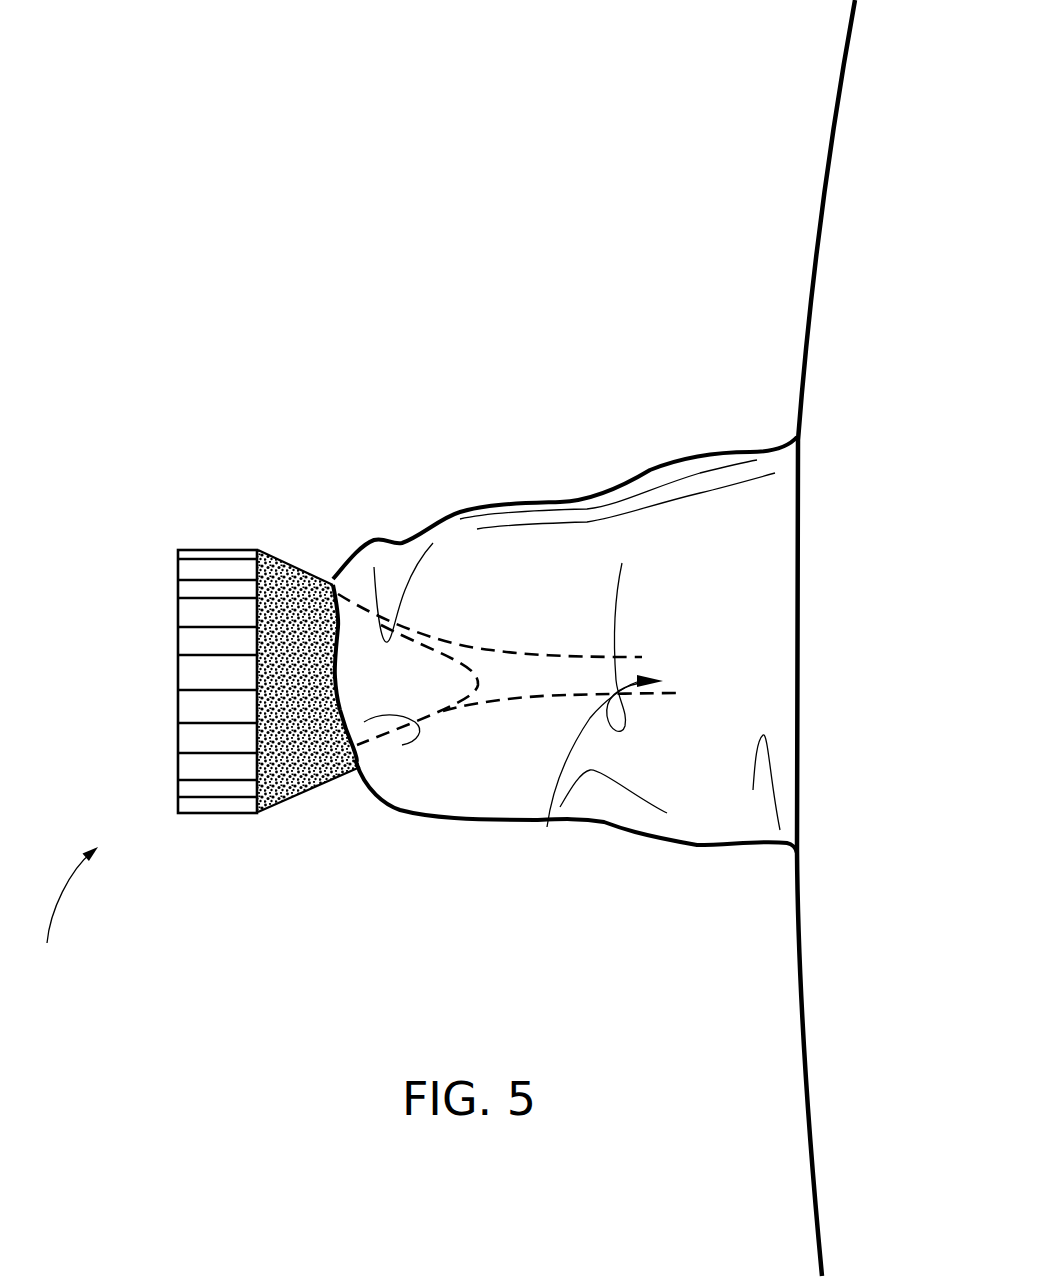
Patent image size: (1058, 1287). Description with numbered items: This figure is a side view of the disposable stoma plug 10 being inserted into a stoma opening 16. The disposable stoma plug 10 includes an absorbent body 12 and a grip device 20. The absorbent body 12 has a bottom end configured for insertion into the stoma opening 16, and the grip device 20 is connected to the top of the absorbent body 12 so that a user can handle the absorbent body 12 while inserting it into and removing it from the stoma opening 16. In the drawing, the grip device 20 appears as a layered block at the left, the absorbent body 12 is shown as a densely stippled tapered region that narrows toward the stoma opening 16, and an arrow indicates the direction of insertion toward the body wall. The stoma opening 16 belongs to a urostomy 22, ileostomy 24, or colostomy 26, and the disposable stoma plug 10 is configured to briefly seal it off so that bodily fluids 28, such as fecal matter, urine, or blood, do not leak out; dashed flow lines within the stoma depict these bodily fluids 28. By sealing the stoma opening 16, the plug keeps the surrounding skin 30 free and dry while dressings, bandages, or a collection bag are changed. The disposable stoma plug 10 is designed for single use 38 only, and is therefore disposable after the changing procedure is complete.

The disposable stoma plug 10 is at (118, 478).
The absorbent body 12 is at (292, 790).
The stoma opening 16 is at (320, 570).
The grip device 20 is at (223, 803).
The urostomy 22 is at (565, 628).
The ileostomy 24 is at (565, 628).
The colostomy 26 is at (580, 492).
The bodily fluids 28 is at (548, 827).
The surrounding skin 30 is at (400, 540).
The single use 38 is at (65, 910).